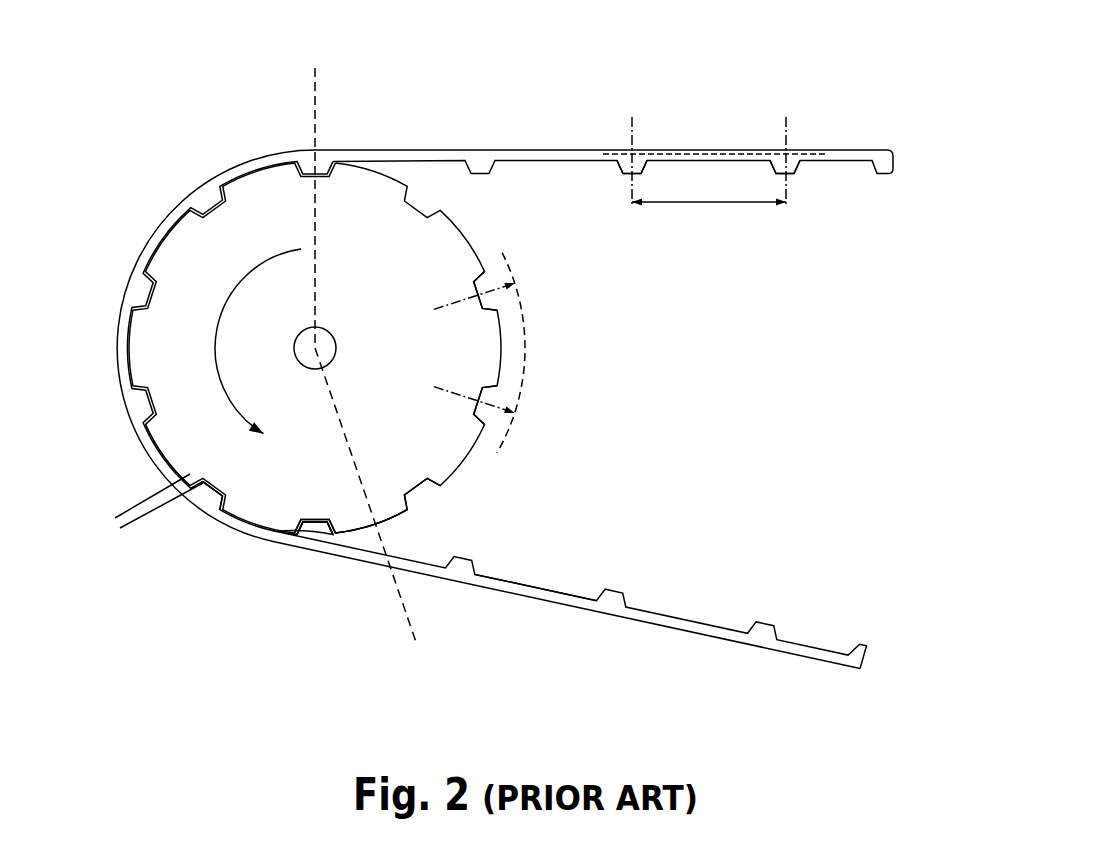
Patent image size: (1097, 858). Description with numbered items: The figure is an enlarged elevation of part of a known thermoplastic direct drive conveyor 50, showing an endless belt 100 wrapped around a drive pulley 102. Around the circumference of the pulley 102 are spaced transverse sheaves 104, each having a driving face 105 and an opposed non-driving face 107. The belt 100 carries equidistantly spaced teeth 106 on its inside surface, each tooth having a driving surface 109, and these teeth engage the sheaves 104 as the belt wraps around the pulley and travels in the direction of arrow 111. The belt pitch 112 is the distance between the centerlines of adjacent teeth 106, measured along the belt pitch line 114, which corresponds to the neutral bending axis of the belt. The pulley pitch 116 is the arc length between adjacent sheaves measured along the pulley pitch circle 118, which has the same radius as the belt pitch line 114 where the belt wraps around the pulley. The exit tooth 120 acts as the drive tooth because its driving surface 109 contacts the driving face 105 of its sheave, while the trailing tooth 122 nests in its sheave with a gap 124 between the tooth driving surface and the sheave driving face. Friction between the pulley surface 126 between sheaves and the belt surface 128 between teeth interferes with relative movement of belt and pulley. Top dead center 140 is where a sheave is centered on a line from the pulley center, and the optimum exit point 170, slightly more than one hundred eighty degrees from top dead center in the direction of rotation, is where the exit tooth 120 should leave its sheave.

The direct drive conveyor 50 is at (563, 98).
The endless belt 100 is at (865, 147).
The drive pulley 102 is at (380, 289).
The sheave 104 is at (483, 309).
The driving face of sheave 105 is at (180, 480).
The tooth 106 is at (621, 168).
The non-driving face of sheave 107 is at (442, 484).
The driving surface of tooth 109 is at (199, 492).
The arrow 111 is at (247, 275).
The belt pitch 112 is at (716, 204).
The belt pitch line 114 is at (703, 152).
The pulley pitch 116 is at (529, 343).
The pulley pitch circle 118 is at (508, 269).
The exit tooth 120 is at (321, 518).
The trailing tooth 122 is at (206, 491).
The gap 124 is at (105, 485).
The pulley surface 126 is at (375, 527).
The belt surface 128 is at (562, 588).
The top dead center 140 is at (317, 97).
The optimum exit point 170 is at (398, 620).